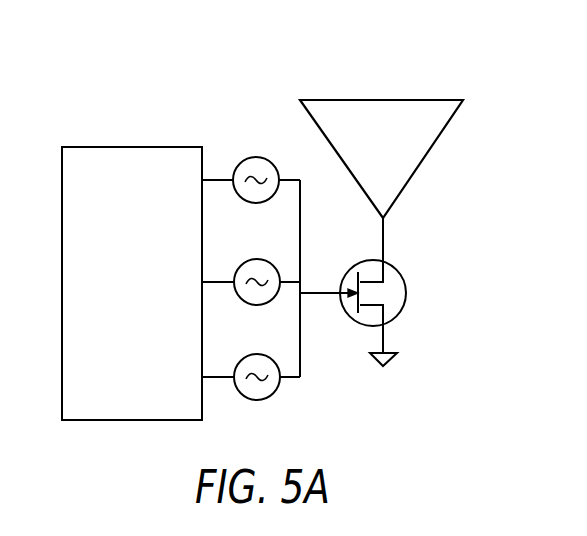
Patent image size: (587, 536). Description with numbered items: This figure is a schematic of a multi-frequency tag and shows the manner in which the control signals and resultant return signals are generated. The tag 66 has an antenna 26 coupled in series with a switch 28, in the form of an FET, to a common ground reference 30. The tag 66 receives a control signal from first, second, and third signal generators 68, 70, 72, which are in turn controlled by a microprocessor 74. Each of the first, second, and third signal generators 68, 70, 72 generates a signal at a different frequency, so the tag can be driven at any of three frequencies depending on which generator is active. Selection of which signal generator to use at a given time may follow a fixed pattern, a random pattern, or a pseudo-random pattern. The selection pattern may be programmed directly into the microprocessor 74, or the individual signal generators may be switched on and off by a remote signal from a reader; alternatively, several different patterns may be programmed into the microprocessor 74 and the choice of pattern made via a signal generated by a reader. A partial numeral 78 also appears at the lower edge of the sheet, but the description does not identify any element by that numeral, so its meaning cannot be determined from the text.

The antenna 26 is at (430, 163).
The switch 28 is at (398, 263).
The common ground reference 30 is at (392, 360).
The tag 66 is at (272, 103).
The first signal generator 68 is at (255, 158).
The second signal generator 70 is at (249, 260).
The third signal generator 72 is at (252, 355).
The microprocessor 74 is at (128, 147).
The reference numeral of adjacent figure 78 is at (446, 534).